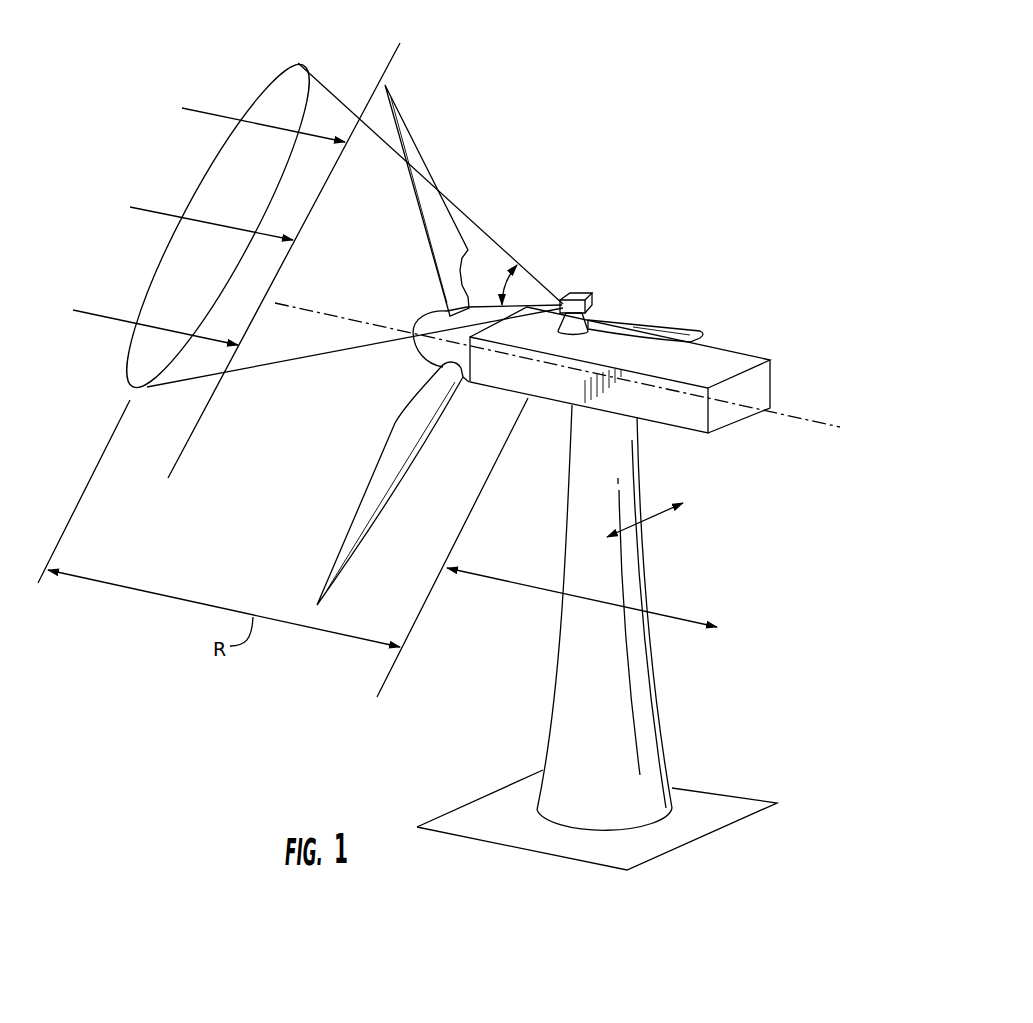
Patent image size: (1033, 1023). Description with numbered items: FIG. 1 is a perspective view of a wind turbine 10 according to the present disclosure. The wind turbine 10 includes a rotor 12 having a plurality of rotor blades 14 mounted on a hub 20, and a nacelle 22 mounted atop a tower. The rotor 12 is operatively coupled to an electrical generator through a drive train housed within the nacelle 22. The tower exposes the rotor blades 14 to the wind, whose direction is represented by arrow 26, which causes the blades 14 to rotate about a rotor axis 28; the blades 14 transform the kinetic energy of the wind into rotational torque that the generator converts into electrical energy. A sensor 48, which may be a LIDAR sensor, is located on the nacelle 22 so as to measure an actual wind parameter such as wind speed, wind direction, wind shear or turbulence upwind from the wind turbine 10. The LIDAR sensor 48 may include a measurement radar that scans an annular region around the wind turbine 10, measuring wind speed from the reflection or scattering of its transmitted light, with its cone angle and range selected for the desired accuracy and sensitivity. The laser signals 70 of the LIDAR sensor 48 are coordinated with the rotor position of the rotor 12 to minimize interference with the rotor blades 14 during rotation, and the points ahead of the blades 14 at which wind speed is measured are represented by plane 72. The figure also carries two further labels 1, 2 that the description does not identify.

The wind turbine 10 is at (705, 118).
The tip clearance distance 1 is at (670, 612).
The tower deflection direction 2 is at (653, 518).
The rotor 12 is at (523, 297).
The rotor blades 14 is at (427, 167).
The hub 20 is at (462, 377).
The nacelle 22 is at (737, 352).
The arrow 26 is at (111, 317).
The rotor axis 28 is at (793, 408).
The sensor 48 is at (600, 300).
The laser signals 70 is at (291, 360).
The plane 72 is at (400, 53).